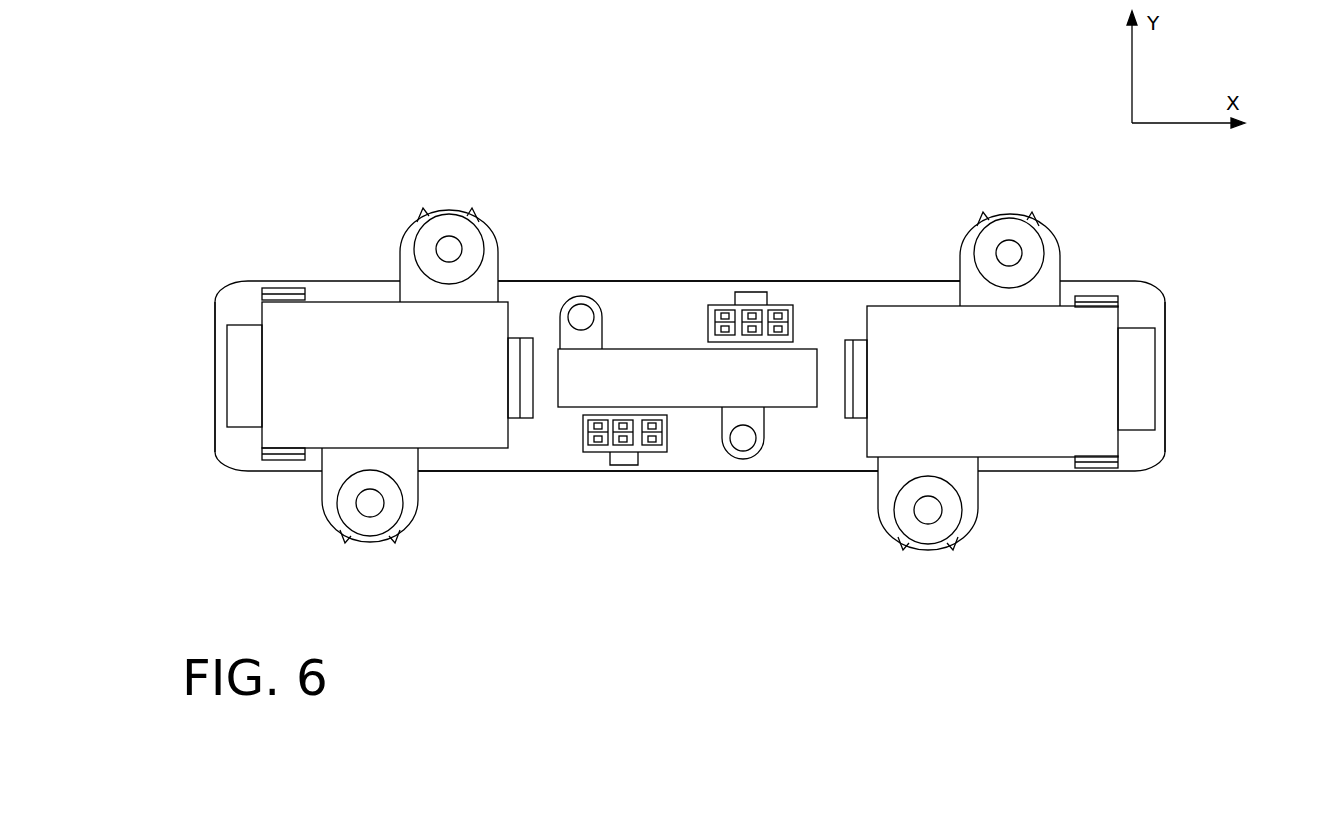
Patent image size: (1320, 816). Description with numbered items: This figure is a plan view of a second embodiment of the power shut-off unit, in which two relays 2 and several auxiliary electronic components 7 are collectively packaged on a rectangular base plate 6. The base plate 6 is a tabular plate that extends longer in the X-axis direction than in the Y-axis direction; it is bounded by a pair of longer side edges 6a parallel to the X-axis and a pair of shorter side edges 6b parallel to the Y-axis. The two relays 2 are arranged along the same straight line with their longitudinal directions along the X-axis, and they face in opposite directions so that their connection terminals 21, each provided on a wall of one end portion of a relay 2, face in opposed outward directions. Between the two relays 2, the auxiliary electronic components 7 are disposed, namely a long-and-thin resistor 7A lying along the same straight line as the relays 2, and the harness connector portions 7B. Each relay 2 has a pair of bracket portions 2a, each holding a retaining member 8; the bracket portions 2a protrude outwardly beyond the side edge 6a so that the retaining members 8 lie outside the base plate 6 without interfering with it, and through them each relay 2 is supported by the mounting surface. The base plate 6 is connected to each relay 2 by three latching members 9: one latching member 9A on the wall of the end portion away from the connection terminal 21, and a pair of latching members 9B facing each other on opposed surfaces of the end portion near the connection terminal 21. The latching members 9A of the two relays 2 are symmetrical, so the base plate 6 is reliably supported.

The relay 2 is at (362, 310).
The bracket portion 2a is at (479, 217).
The base plate 6 is at (243, 300).
The side edge 6a is at (642, 281).
The side edge 6b is at (215, 320).
The auxiliary electronic component 7 is at (704, 387).
The resistor 7A is at (662, 365).
The harness connector portion 7B is at (753, 300).
The retaining member 8 is at (452, 220).
The latching member 9 is at (724, 380).
The latching member 9A is at (522, 373).
The latching member 9B is at (283, 292).
The connection terminal 21 is at (240, 383).